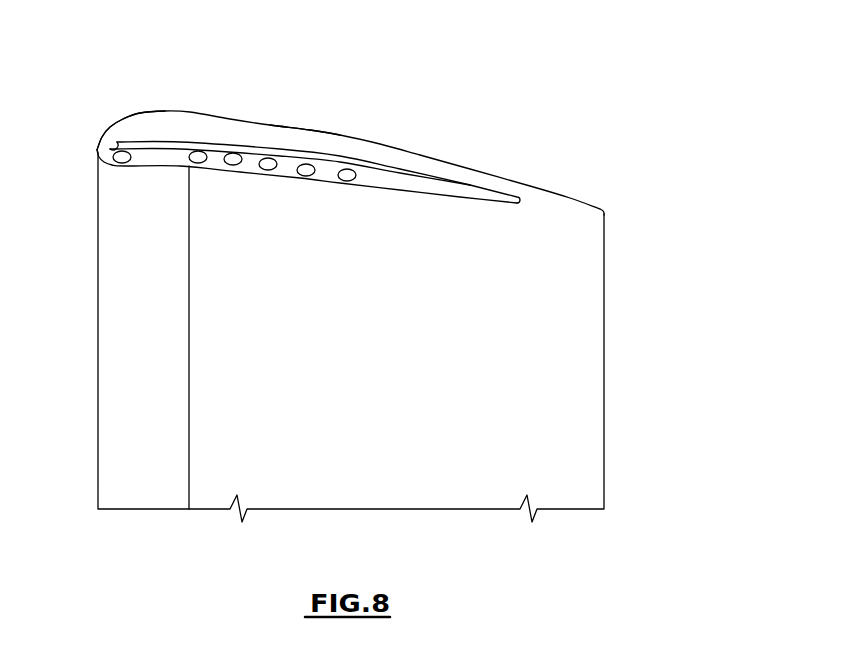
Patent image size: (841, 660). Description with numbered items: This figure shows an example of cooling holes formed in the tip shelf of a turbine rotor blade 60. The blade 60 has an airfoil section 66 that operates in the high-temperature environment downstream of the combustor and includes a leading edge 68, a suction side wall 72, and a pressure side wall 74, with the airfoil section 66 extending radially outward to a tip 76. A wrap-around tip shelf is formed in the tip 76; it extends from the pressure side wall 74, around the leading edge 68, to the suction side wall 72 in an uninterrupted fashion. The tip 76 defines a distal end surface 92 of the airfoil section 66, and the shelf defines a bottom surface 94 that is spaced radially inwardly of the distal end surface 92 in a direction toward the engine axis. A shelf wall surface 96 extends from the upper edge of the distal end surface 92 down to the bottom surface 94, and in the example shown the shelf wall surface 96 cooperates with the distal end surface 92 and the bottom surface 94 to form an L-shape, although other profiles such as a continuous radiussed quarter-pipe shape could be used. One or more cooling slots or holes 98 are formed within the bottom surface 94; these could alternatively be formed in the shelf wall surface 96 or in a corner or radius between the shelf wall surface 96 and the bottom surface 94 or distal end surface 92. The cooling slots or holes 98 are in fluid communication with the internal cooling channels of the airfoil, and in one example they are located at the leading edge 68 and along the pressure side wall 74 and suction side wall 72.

The turbine rotor blade 60 is at (662, 85).
The airfoil section 66 is at (573, 282).
The leading edge 68 is at (118, 140).
The suction side wall 72 is at (308, 133).
The pressure side wall 74 is at (417, 173).
The tip 76 is at (453, 170).
The distal end surface 92 is at (283, 138).
The bottom surface 94 is at (102, 150).
The shelf wall surface 96 is at (342, 160).
The cooling slots or holes 98 is at (263, 162).